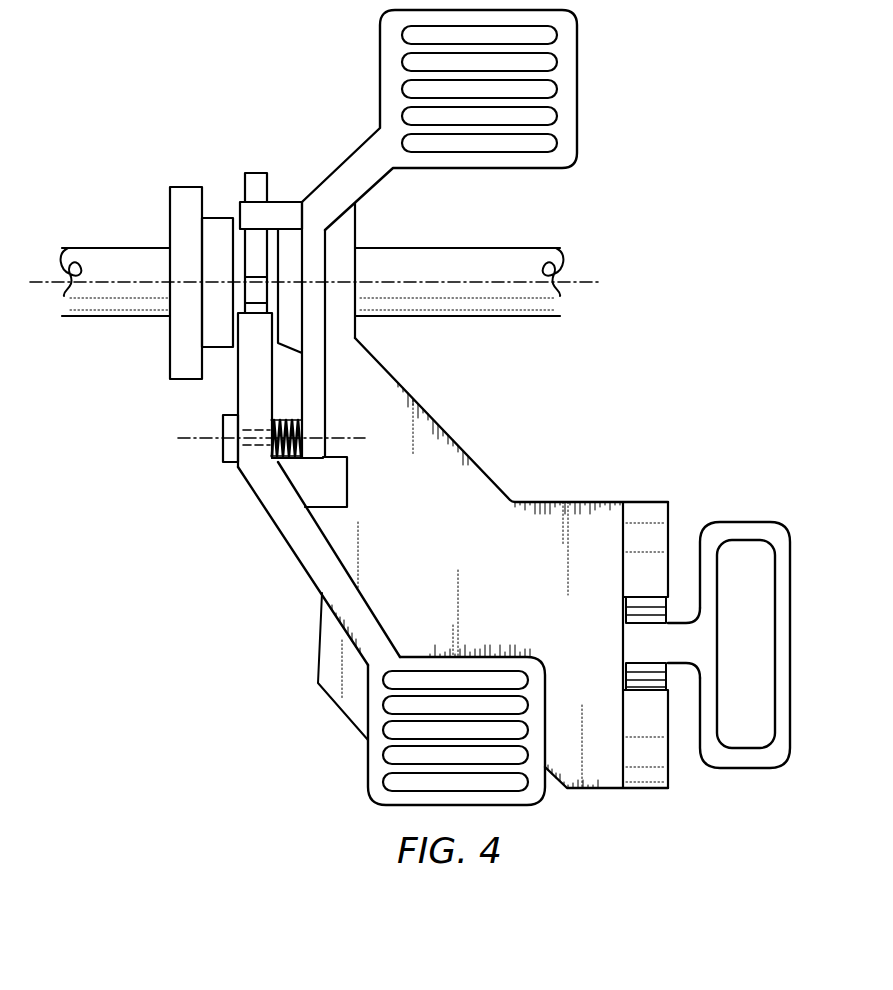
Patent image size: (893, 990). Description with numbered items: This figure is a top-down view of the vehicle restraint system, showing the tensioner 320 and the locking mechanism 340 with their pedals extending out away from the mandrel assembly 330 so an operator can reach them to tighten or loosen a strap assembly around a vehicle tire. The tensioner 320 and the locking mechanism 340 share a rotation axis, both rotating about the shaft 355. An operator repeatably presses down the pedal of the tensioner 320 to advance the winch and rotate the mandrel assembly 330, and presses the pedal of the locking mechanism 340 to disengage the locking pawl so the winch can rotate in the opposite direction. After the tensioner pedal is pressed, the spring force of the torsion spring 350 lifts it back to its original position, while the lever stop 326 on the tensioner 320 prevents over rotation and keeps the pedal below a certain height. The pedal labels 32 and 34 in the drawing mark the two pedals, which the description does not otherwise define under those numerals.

The first pedal (brake pedal) 32 is at (392, 57).
The second pedal (accelerator pedal) 34 is at (380, 747).
The tensioner 320 is at (350, 183).
The lever stop 326 is at (348, 480).
The mandrel assembly 330 is at (110, 245).
The locking mechanism 340 is at (300, 572).
The torsion spring 350 is at (280, 462).
The shaft 355 is at (222, 431).